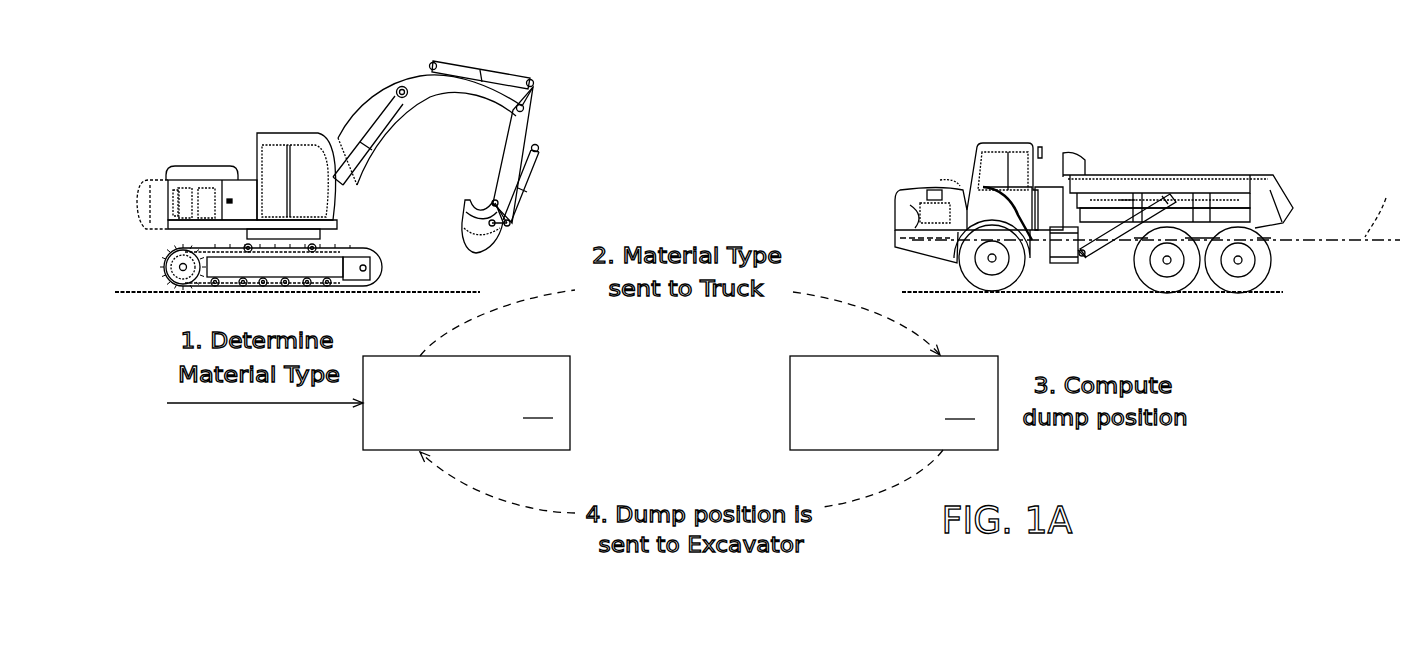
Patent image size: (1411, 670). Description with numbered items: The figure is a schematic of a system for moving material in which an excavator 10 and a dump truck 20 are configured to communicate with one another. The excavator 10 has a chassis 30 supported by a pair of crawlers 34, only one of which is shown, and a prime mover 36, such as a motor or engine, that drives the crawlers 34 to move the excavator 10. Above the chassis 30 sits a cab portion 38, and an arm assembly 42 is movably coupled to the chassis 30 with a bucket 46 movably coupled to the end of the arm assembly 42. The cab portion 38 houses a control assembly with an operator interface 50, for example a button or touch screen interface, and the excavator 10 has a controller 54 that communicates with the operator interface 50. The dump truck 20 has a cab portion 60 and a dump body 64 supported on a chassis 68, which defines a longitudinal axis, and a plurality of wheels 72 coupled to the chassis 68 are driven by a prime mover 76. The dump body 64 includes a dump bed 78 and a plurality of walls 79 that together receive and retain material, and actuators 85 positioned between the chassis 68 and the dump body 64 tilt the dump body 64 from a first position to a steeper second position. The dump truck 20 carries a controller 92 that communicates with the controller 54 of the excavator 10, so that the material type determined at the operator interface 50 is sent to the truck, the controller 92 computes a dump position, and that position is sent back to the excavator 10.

The excavator 10 is at (223, 95).
The dump truck 20 is at (1052, 93).
The chassis 30 is at (162, 222).
The crawlers 34 is at (165, 263).
The prime mover 36 is at (150, 180).
The cab portion 38 is at (307, 171).
The arm assembly 42 is at (433, 88).
The bucket 46 is at (467, 232).
The operator interface 50 is at (466, 403).
The controller 54 is at (185, 178).
The cab portion 60 is at (995, 167).
The dump body 64 is at (1272, 162).
The chassis 68 is at (897, 238).
The wheels 72 is at (1282, 258).
The prime mover 76 is at (897, 190).
The dump bed 78 is at (1125, 250).
The walls 79 is at (1065, 153).
The actuators 85 is at (1125, 205).
The controller 92 is at (943, 180).